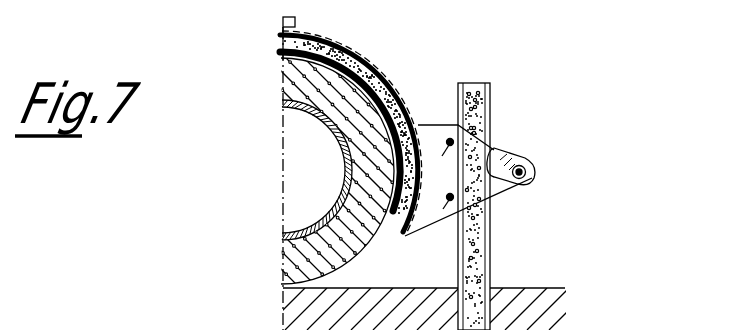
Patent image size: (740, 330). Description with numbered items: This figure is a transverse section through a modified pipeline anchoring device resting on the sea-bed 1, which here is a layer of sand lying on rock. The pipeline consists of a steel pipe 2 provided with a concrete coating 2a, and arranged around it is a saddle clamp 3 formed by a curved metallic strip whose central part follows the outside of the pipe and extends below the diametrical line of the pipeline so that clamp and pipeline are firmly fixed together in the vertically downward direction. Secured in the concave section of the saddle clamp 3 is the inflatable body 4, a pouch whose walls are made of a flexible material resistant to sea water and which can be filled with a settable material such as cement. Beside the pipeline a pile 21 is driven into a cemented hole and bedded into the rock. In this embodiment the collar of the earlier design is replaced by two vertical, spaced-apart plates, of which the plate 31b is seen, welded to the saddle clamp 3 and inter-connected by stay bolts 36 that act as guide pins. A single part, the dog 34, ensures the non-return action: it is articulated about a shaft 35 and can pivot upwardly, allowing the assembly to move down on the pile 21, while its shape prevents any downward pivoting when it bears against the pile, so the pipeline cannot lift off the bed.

The bed 1 is at (511, 293).
The pipe 2 is at (340, 197).
The concrete coating 2a is at (366, 250).
The saddle clamp 3 is at (388, 80).
The inflatable body 4 is at (363, 58).
The pile 21 is at (490, 108).
The vertical plate 31b is at (432, 135).
The dog 34 is at (498, 150).
The shaft 35 is at (533, 178).
The stay bolt 36 is at (447, 195).